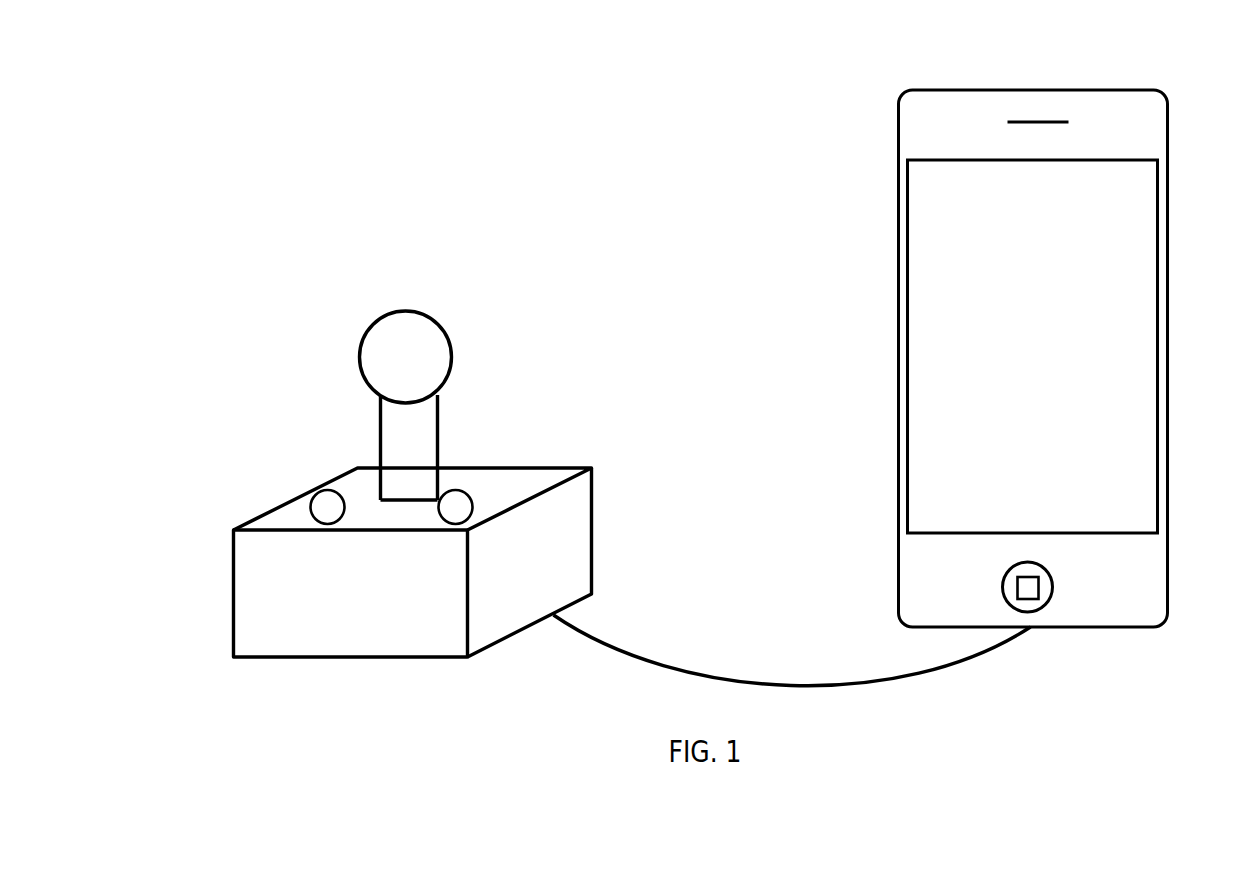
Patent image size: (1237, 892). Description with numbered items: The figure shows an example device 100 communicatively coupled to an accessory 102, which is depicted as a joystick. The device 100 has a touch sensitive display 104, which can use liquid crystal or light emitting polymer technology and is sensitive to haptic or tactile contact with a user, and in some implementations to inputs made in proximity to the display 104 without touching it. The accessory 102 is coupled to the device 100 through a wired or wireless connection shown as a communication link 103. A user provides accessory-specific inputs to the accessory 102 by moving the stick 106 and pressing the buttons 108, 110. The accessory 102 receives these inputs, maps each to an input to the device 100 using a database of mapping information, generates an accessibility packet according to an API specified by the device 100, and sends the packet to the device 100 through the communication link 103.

The device 100 is at (1128, 88).
The accessory 102 is at (578, 513).
The communication link 103 is at (932, 673).
The touch sensitive display 104 is at (1142, 239).
The stick 106 is at (438, 340).
The button 108 is at (325, 510).
The button 110 is at (455, 508).